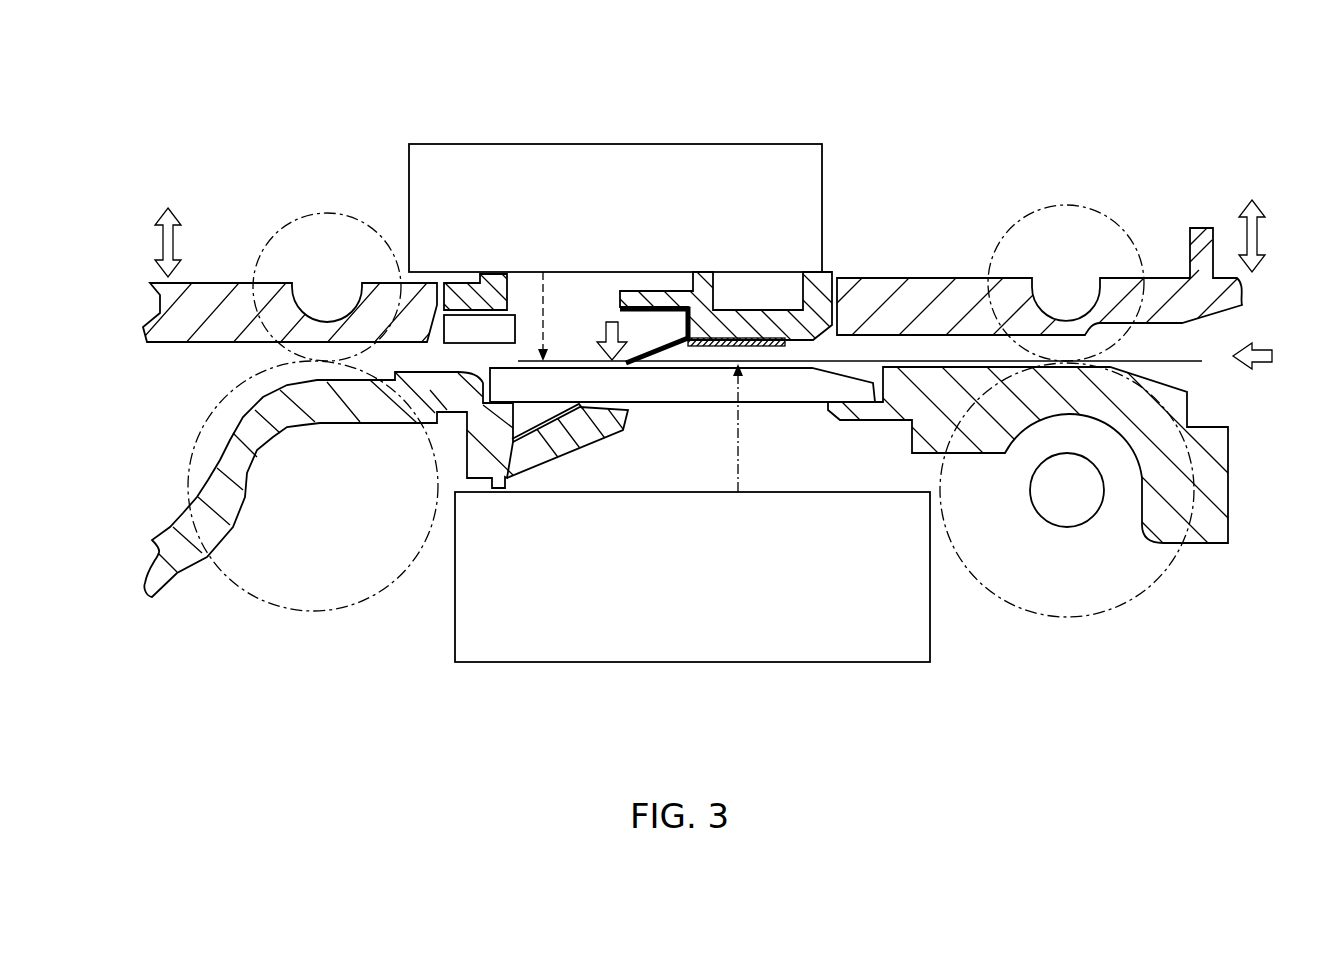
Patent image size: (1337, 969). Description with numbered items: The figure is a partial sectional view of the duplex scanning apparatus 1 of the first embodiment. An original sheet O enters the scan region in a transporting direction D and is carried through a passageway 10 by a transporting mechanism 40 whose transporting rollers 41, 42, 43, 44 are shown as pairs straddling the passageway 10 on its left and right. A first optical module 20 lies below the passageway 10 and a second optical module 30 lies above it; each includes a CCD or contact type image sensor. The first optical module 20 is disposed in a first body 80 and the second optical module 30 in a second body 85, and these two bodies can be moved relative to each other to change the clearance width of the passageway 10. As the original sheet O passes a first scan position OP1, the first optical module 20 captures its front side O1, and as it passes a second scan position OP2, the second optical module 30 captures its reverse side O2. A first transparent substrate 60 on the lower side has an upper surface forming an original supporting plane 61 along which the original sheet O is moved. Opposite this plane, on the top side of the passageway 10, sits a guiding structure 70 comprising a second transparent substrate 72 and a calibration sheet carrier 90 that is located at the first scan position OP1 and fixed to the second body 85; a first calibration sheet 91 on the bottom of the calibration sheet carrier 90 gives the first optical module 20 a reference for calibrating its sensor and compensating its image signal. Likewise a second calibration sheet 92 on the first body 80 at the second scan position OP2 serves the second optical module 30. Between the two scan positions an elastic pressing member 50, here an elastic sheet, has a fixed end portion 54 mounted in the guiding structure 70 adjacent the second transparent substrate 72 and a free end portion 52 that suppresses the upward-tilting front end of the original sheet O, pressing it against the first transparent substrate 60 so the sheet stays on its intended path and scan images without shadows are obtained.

The duplex scanning apparatus 1 is at (681, 73).
The passageway 10 is at (858, 348).
The first optical module 20 is at (472, 663).
The second optical module 30 is at (822, 144).
The transporting mechanism 40 is at (112, 55).
The transporting roller 41 is at (272, 233).
The transporting roller 42 is at (245, 602).
The transporting roller 43 is at (1126, 218).
The transporting roller 44 is at (1133, 602).
The elastic pressing member 50 is at (649, 450).
The free end portion 52 is at (622, 363).
The fixed end portion 54 is at (652, 353).
The first transparent substrate 60 is at (479, 401).
The original supporting plane 61 is at (489, 500).
The guiding structure 70 is at (297, 62).
The second transparent substrate 72 is at (472, 330).
The first body 80 is at (1213, 478).
The second body 85 is at (1222, 298).
The calibration sheet carrier 90 is at (707, 296).
The first calibration sheet 91 is at (735, 340).
The second calibration sheet 92 is at (540, 432).
The original sheet O is at (958, 360).
The front side O1 is at (800, 362).
The reverse side O2 is at (572, 362).
The first scan position OP1 is at (737, 468).
The second scan position OP2 is at (545, 300).
The transporting direction D is at (1256, 370).